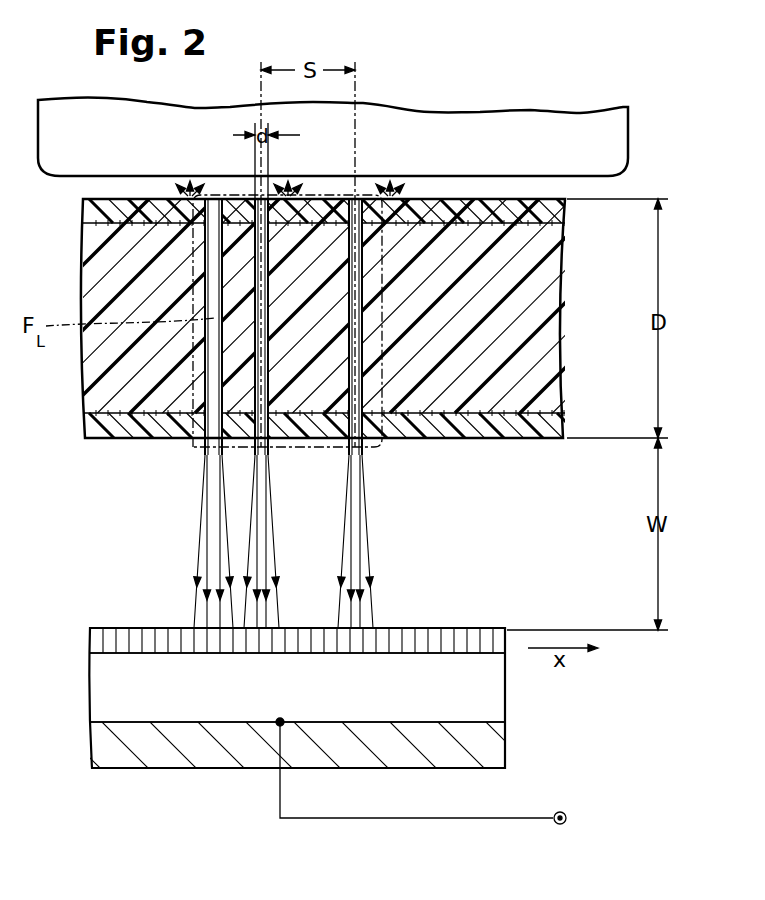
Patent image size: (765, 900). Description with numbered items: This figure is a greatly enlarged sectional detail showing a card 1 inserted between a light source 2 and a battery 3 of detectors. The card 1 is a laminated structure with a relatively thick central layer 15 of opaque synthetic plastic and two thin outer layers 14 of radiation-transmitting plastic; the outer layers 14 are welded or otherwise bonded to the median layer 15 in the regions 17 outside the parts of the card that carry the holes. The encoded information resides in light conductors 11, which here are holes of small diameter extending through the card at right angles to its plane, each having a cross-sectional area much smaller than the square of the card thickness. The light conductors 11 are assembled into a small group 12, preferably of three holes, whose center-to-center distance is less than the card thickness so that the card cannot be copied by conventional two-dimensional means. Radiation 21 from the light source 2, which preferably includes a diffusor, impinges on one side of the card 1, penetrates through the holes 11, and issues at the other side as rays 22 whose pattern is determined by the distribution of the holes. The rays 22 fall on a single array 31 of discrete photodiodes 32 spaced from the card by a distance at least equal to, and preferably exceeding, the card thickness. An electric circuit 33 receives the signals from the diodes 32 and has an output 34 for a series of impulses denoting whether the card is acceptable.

The card 1 is at (568, 282).
The light source 2 is at (618, 141).
The battery of detectors 3 is at (157, 774).
The light conductor 11 is at (262, 283).
The group of light conductors 12 is at (195, 452).
The outer layer 14 is at (556, 428).
The central layer 15 is at (548, 336).
The bonding region 17 is at (96, 214).
The radiation 21 is at (398, 186).
The rays 22 is at (272, 530).
The array of photodiodes 31 is at (389, 622).
The photodiode 32 is at (477, 636).
The electric circuit 33 is at (213, 712).
The output 34 is at (568, 814).